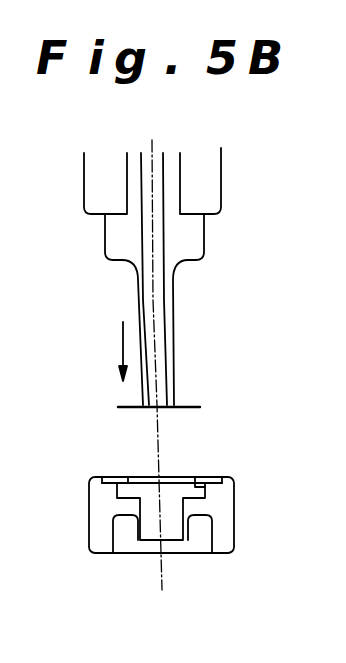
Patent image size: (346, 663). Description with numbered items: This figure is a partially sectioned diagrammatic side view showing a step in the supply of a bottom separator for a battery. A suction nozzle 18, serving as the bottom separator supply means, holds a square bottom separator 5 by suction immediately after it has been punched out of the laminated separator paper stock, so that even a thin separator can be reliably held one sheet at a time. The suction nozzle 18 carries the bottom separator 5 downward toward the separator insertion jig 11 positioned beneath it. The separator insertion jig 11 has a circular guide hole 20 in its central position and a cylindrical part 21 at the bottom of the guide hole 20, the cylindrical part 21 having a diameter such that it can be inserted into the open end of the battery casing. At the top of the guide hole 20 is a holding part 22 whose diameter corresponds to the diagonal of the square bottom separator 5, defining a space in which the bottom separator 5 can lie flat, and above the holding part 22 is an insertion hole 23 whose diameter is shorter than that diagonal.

The suction nozzle 18 is at (175, 318).
The bottom separator 5 is at (185, 406).
The separator insertion jig 11 is at (241, 499).
The holding part 22 is at (203, 479).
The insertion hole 23 is at (140, 478).
The guide hole 20 is at (152, 522).
The cylindrical part 21 is at (198, 522).